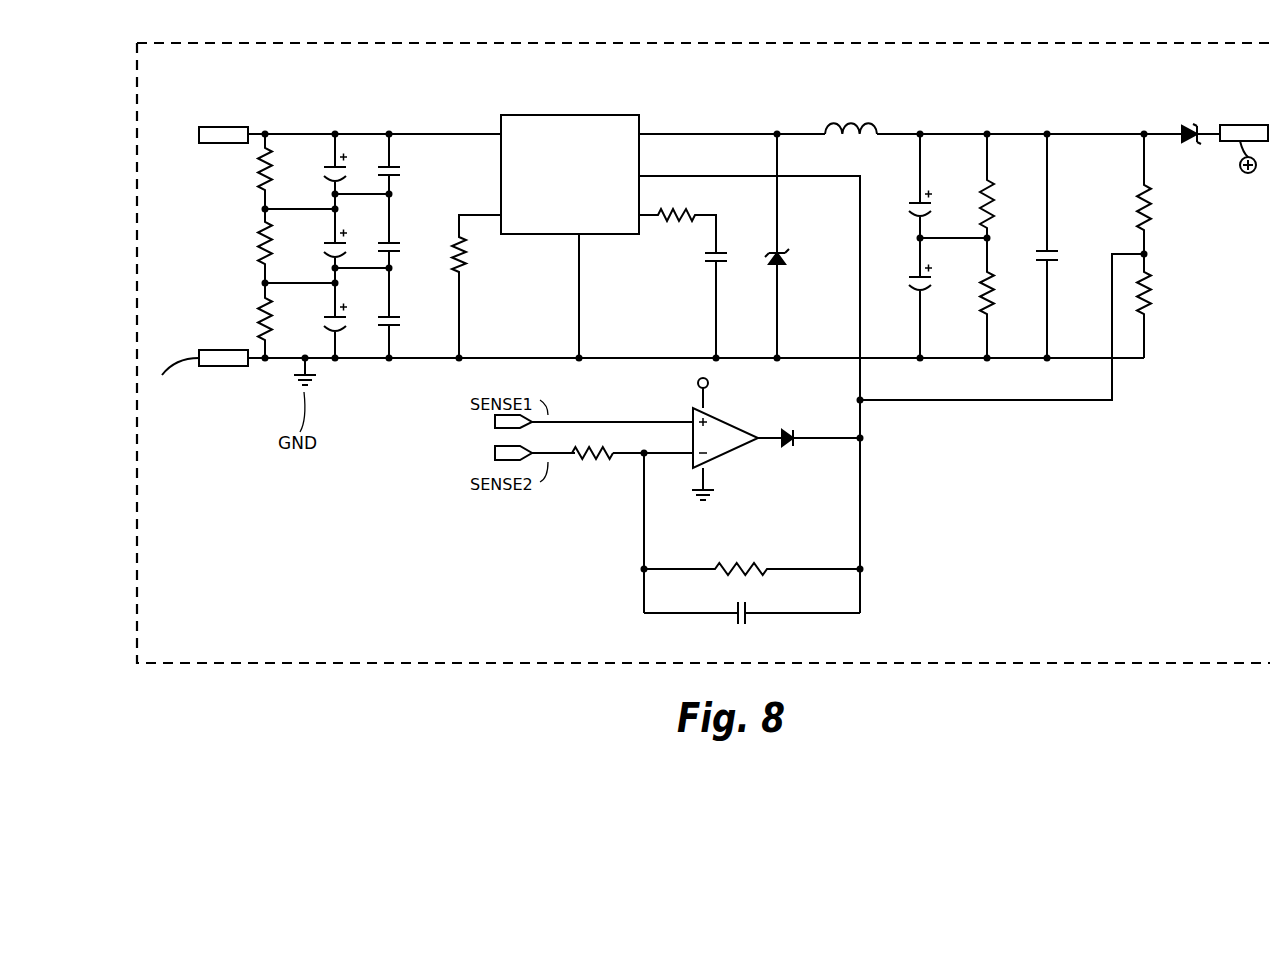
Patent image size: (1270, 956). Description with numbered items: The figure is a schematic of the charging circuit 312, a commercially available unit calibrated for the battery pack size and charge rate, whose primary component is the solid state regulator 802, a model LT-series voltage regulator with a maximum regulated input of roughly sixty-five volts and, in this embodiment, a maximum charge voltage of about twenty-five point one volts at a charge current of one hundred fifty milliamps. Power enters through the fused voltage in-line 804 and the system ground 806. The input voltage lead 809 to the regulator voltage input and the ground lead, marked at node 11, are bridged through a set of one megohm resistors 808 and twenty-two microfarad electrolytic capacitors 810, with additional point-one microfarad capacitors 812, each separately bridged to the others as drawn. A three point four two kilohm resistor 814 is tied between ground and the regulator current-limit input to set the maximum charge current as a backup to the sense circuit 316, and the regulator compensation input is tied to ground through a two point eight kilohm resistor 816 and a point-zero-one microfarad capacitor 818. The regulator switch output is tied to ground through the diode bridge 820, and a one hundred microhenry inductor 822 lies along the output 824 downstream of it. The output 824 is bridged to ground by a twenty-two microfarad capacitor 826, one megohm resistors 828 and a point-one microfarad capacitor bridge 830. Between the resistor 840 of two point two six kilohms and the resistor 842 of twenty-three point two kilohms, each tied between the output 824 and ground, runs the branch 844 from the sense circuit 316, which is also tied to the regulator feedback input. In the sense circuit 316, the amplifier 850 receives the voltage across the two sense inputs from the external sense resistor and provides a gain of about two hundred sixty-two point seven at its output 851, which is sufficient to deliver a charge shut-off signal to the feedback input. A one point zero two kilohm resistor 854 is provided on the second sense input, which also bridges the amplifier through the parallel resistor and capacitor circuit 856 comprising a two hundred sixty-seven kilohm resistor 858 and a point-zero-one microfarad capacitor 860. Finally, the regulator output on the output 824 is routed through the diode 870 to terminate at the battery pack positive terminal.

The charging circuit 312 is at (1040, 66).
The solid state regulator 802 is at (576, 117).
The fused voltage in-line 804 is at (231, 122).
The system ground 806 is at (231, 366).
The high-resistance resistors 808 is at (252, 190).
The input voltage lead 809 is at (477, 132).
The electrolytic capacitors 810 is at (348, 162).
The capacitors 812 is at (401, 160).
The ground node 11 is at (431, 352).
The resistor 814 is at (468, 280).
The resistor 816 is at (663, 212).
The capacitor 818 is at (704, 263).
The diode bridge 820 is at (783, 268).
The inductor 822 is at (843, 122).
The output 824 is at (943, 132).
The capacitor 826 is at (932, 215).
The resistors 828 is at (992, 200).
The capacitor bridge 830 is at (1052, 262).
The resistor 840 is at (1150, 275).
The resistor 842 is at (1150, 195).
The branch 844 is at (997, 401).
The amplifier 850 is at (740, 425).
The output 851 is at (864, 465).
The resistor 854 is at (614, 452).
The sense circuit 316 is at (578, 460).
The parallel resistor and capacitor circuit 856 is at (864, 608).
The resistor 858 is at (739, 567).
The capacitor 860 is at (752, 616).
The diode 870 is at (1193, 140).